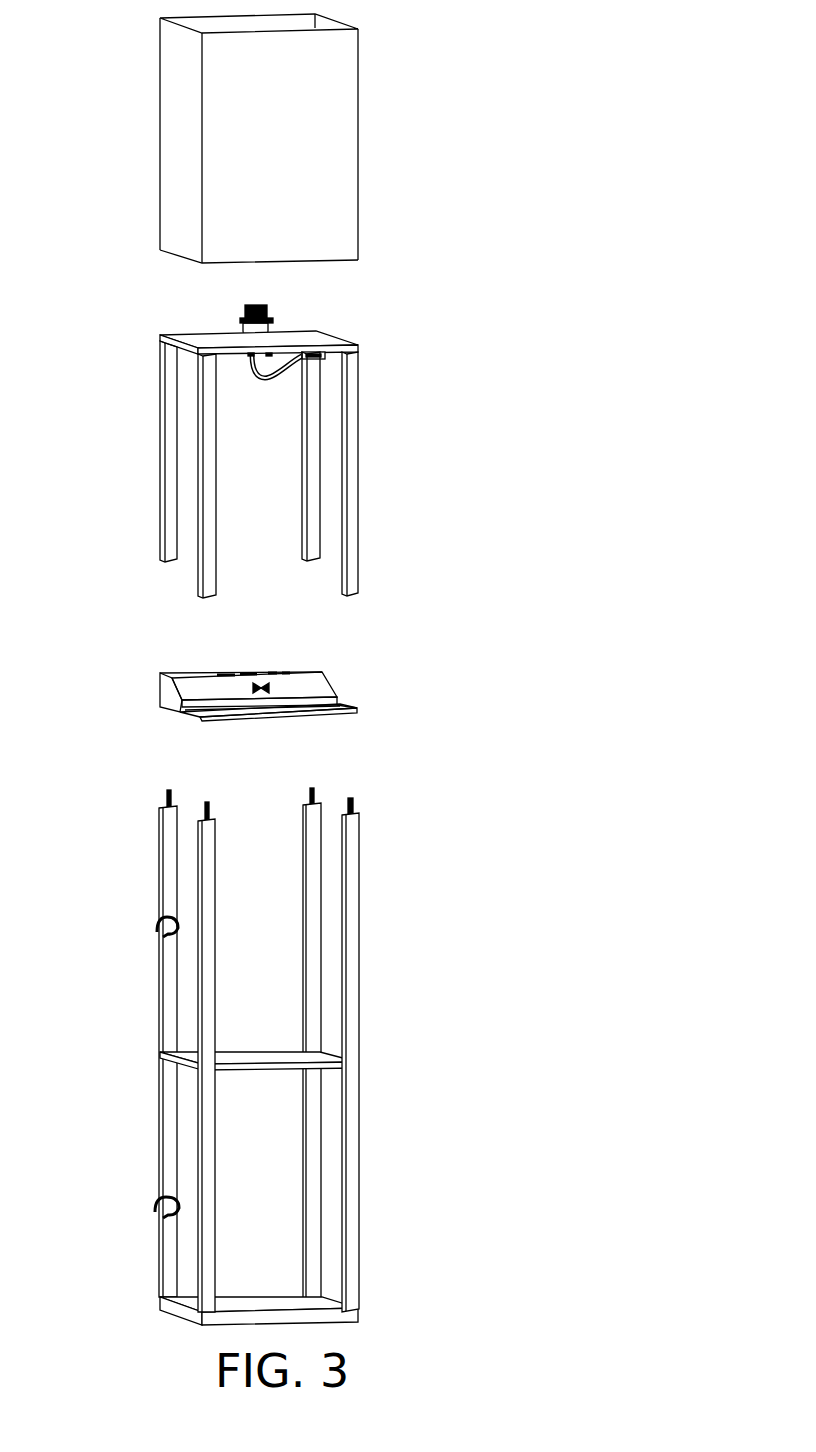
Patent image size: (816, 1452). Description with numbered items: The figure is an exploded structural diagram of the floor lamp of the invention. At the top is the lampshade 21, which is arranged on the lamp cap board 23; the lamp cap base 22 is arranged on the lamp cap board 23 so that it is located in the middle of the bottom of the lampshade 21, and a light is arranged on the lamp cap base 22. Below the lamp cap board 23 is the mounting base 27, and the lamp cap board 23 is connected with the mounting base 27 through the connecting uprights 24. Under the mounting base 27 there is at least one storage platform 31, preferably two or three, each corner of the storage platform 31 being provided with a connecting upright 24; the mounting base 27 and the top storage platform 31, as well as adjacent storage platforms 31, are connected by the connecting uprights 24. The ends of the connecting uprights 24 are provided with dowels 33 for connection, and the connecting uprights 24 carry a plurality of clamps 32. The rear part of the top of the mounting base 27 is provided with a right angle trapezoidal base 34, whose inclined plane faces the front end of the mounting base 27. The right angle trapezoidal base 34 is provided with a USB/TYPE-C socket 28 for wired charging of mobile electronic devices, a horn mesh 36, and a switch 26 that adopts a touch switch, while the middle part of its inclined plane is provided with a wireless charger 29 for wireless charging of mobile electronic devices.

The lampshade 21 is at (303, 138).
The lamp cap base 22 is at (347, 232).
The lamp cap board 23 is at (192, 308).
The connecting uprights 24 is at (313, 469).
The switch 26 is at (347, 619).
The mounting base 27 is at (319, 736).
The USB/TYPE-C socket 28 is at (157, 624).
The wireless charger 29 is at (174, 731).
The storage platform 31 is at (305, 1006).
The clamps 32 is at (126, 1021).
The dowels 33 is at (318, 841).
The right angle trapezoidal base 34 is at (292, 671).
The horn mesh 36 is at (335, 581).